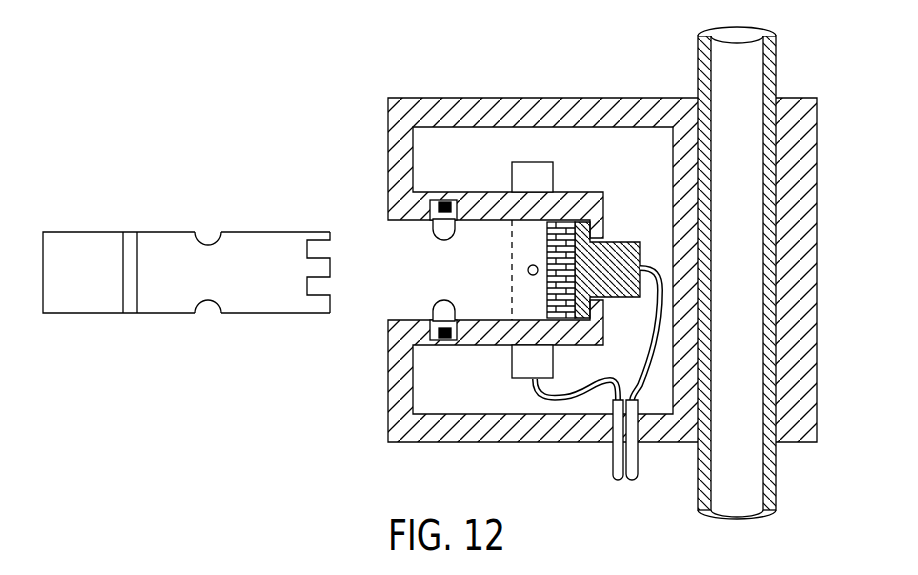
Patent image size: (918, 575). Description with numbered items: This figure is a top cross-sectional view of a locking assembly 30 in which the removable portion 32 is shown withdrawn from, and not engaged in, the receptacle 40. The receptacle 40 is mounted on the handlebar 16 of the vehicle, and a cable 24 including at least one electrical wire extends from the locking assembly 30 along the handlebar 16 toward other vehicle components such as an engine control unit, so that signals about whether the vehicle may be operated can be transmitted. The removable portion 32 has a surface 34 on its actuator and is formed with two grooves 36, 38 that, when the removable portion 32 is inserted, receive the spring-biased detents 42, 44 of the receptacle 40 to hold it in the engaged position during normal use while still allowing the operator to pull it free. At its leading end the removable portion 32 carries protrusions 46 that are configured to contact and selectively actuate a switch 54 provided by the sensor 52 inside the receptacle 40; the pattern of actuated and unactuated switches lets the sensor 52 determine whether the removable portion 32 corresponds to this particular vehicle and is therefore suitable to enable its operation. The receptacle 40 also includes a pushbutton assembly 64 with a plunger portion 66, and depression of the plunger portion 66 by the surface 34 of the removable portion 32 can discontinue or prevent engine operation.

The handlebar 16 is at (698, 68).
The cable 24 is at (613, 458).
The locking assembly 30 is at (140, 112).
The removable portion 32 is at (70, 328).
The surface 34 is at (268, 277).
The groove 36 is at (208, 231).
The groove 38 is at (208, 314).
The receptacle 40 is at (413, 90).
The detent 42 is at (432, 229).
The detent 44 is at (432, 316).
The protrusions 46 is at (330, 280).
The sensor 52 is at (618, 242).
The switch 54 is at (547, 250).
The pushbutton assembly 64 is at (512, 362).
The plunger portion 66 is at (528, 270).